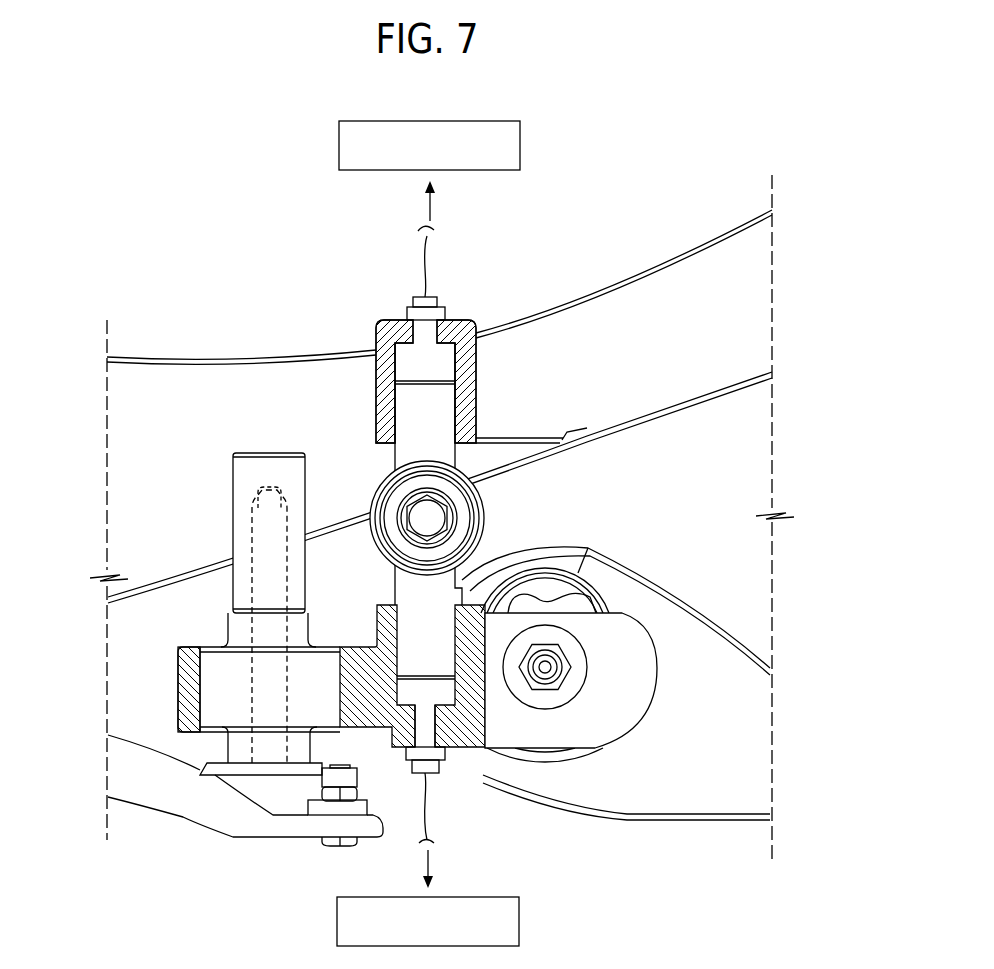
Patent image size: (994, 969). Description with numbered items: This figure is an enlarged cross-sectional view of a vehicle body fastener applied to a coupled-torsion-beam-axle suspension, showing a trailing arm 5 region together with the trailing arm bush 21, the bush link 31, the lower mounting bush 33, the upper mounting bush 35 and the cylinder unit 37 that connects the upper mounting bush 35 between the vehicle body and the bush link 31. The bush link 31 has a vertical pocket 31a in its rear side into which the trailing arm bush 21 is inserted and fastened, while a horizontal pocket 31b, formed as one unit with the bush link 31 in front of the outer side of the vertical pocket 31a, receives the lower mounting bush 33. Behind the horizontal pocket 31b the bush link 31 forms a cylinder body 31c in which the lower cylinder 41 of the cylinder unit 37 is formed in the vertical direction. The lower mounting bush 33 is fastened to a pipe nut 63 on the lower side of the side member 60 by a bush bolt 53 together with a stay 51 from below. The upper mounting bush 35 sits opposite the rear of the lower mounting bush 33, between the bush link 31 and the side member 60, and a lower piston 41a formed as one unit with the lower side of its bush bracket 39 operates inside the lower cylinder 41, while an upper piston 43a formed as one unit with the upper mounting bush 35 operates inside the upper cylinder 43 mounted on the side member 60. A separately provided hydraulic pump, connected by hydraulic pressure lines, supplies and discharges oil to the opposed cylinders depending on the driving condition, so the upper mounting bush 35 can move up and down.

The lower arm 5 is at (684, 820).
The trailing arm bush 21 is at (590, 590).
The bush link 31 is at (370, 717).
The vertical pocket 31a is at (648, 625).
The horizontal pocket 31b is at (168, 693).
The cylinder body 31c is at (462, 742).
The lower mounting bush 33 is at (218, 676).
The upper mounting bush 35 is at (405, 490).
The cylinder unit 37 is at (625, 432).
The bush bracket 39 is at (408, 555).
The lower cylinder 41 is at (460, 590).
The lower piston 41a is at (433, 632).
The upper cylinder 43 is at (467, 392).
The upper piston 43a is at (427, 422).
The stay 51 is at (175, 813).
The bush bolt 53 is at (257, 542).
The side member 60 is at (620, 282).
The pipe nut 63 is at (242, 477).